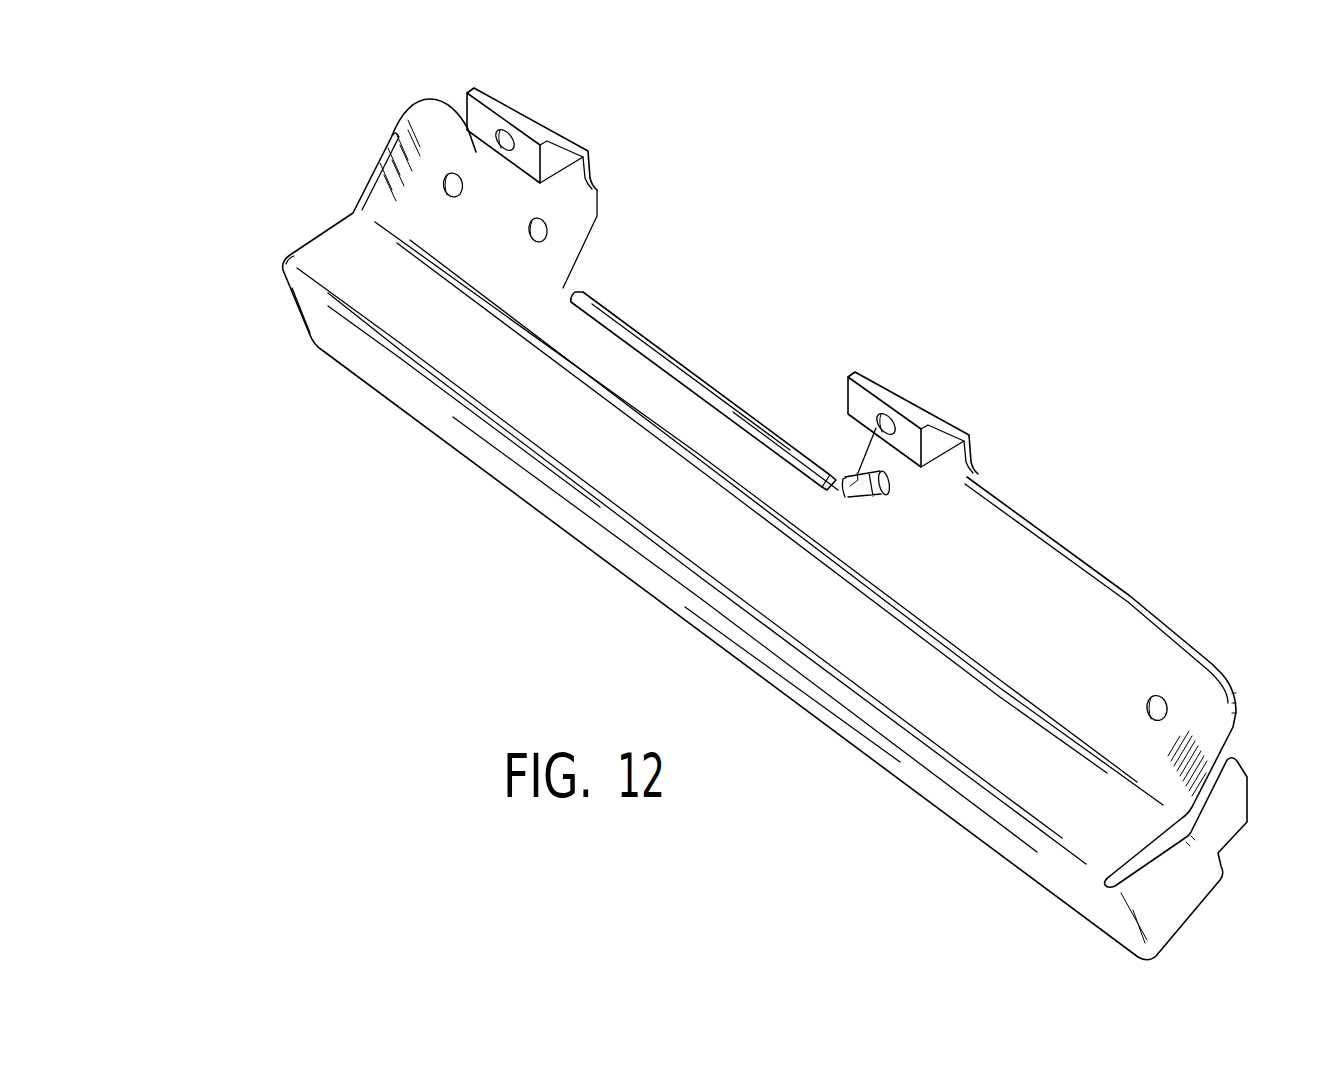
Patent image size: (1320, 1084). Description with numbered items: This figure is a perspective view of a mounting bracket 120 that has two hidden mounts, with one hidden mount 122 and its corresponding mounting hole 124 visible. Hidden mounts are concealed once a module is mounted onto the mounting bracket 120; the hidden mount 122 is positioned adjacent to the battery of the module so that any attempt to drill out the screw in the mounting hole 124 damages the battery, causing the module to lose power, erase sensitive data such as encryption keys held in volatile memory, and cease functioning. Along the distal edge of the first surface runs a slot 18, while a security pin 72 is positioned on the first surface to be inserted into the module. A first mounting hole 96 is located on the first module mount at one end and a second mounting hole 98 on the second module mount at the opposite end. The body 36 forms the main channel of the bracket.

The mounting bracket 120 is at (250, 185).
The bracket body 36 is at (381, 373).
The first mounting hole 96 is at (441, 186).
The second mounting hole 98 is at (1146, 707).
The slot 18 is at (694, 326).
The hidden mount 122 is at (490, 93).
The mounting hole 124 is at (503, 150).
The security pin 72 is at (857, 474).